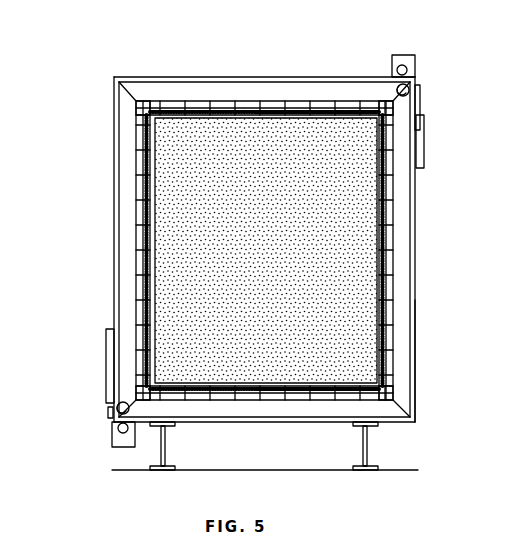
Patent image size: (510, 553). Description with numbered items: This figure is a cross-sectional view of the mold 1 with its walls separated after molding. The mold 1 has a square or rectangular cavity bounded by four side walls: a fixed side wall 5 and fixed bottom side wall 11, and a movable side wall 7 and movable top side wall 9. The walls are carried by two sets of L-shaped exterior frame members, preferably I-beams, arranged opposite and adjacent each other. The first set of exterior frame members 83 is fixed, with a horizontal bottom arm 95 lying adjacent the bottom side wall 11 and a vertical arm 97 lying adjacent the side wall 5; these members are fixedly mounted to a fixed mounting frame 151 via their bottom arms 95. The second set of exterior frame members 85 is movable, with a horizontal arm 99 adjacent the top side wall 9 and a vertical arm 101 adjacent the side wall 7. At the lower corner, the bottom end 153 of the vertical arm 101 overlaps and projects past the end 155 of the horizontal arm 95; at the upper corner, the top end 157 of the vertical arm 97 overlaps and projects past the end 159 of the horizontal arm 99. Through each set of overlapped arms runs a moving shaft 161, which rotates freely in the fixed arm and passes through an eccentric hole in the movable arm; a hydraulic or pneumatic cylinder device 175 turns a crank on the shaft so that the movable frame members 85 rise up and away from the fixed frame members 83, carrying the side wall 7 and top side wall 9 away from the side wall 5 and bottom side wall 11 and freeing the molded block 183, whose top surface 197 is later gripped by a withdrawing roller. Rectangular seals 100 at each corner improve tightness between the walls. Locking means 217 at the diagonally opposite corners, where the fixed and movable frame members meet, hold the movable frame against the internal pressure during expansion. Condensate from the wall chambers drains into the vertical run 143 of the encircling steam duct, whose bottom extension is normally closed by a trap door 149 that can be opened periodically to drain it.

The mold 1 is at (260, 432).
The side wall 5 is at (377, 276).
The side wall 7 is at (151, 280).
The top side wall 9 is at (259, 107).
The bottom side wall 11 is at (272, 384).
The first set of exterior frame members 83 is at (428, 313).
The second set of exterior frame members 85 is at (229, 76).
The horizontal bottom arm 95 is at (293, 424).
The vertical arm 97 is at (416, 252).
The horizontal arm 99 is at (301, 76).
The rectangular seal 100 is at (137, 106).
The vertical arm 101 is at (113, 246).
The vertical run 143 is at (490, 195).
The trap door 149 is at (498, 440).
The fixed mounting frame 151 is at (158, 458).
The bottom end 153 is at (124, 448).
The end 155 is at (108, 415).
The top end 157 is at (405, 52).
The end 159 is at (421, 85).
The moving shaft 161 is at (400, 86).
The hydraulic or pneumatic cylinder device 175 is at (426, 143).
The molded block 183 is at (146, 178).
The top surface 197 is at (173, 120).
The locking means 217 is at (409, 70).